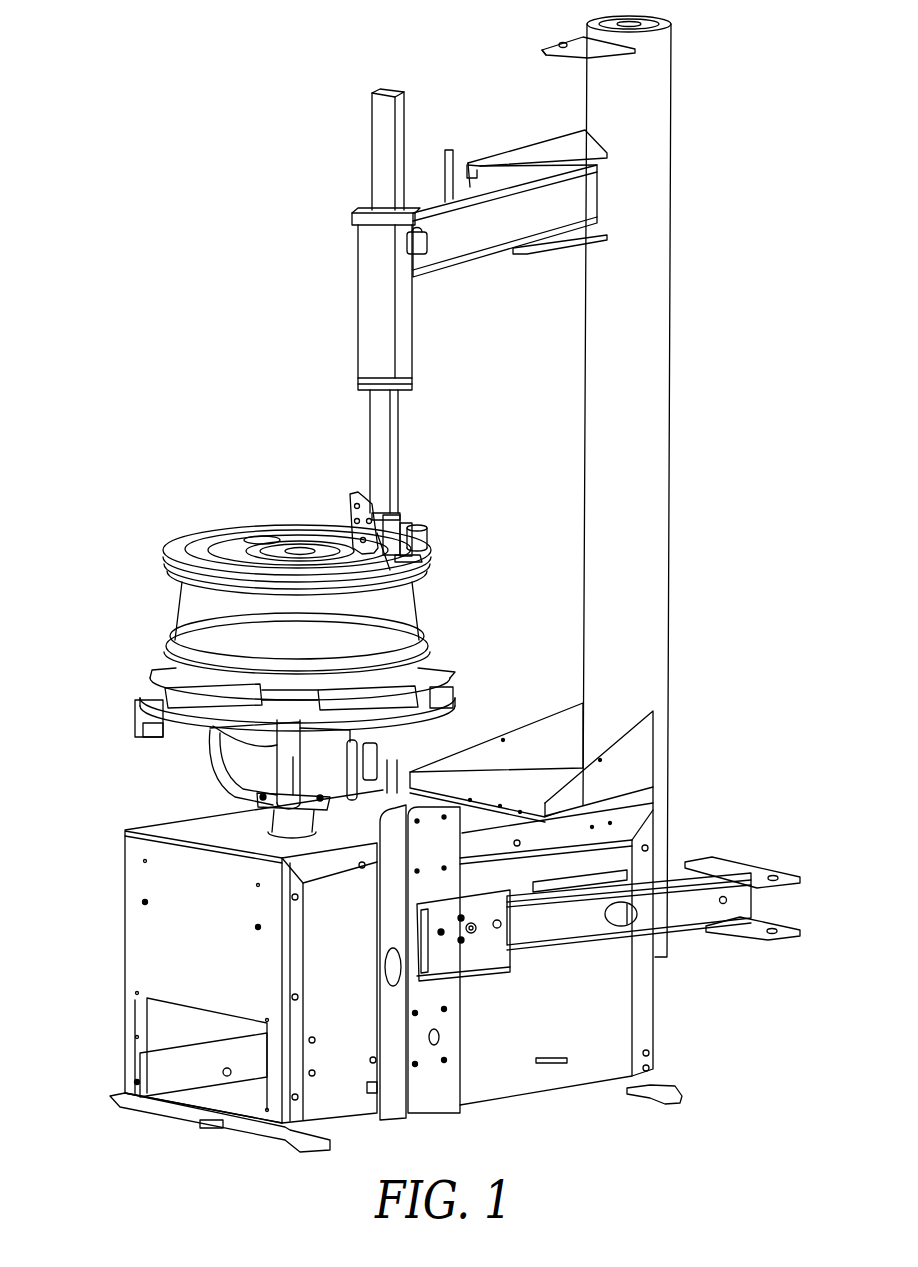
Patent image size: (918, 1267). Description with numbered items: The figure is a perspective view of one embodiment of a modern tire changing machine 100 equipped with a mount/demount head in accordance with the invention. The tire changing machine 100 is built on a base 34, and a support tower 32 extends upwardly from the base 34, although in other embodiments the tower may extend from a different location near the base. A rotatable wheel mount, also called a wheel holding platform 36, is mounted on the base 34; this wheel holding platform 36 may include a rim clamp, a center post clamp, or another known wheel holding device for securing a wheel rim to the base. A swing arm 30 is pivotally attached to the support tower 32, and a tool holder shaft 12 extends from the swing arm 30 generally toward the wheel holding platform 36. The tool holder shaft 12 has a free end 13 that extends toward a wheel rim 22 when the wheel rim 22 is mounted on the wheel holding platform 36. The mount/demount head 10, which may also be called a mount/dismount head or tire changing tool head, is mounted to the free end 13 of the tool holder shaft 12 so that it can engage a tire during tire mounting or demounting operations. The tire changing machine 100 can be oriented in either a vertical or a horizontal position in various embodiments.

The tire changing machine 100 is at (151, 271).
The support tower 32 is at (673, 213).
The swing arm 30 is at (370, 243).
The tool holder shaft 12 is at (380, 438).
The free end 13 is at (400, 514).
The mount/demount head 10 is at (437, 545).
The wheel rim 22 is at (168, 556).
The wheel holding platform 36 is at (181, 786).
The base 34 is at (105, 1023).